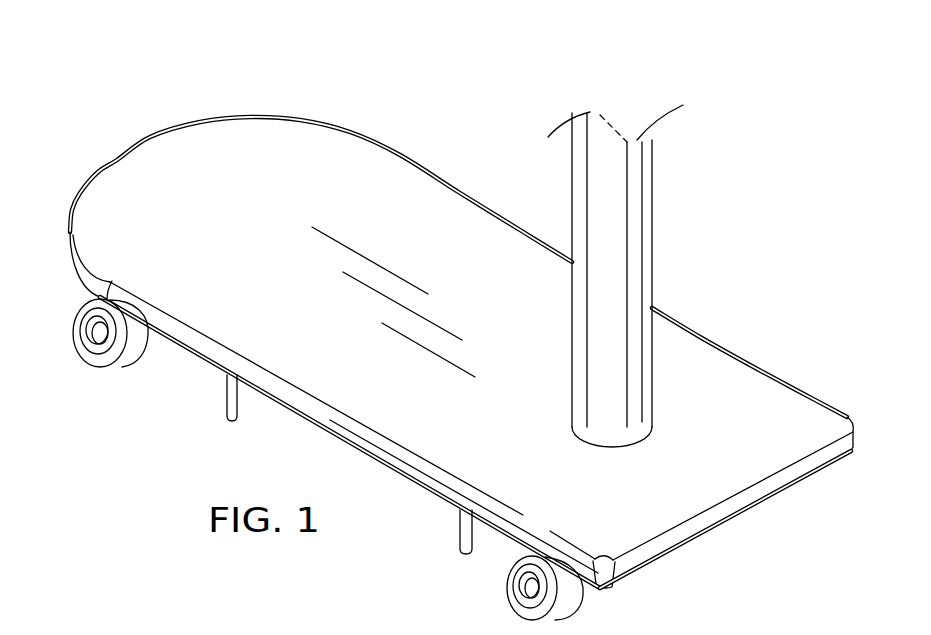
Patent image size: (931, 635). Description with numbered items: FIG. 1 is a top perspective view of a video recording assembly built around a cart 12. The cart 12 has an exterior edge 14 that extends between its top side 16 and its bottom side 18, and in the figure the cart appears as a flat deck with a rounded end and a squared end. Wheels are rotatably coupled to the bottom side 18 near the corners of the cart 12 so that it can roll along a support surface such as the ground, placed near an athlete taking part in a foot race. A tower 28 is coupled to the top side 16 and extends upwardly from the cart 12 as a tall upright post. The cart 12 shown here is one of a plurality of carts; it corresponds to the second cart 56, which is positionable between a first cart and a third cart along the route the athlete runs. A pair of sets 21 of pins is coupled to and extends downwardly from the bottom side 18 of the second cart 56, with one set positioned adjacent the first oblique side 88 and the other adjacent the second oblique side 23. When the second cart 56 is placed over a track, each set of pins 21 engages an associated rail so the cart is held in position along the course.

The cart 12 is at (461, 330).
The exterior edge 14 is at (374, 442).
The top side 16 is at (462, 219).
The bottom side 18 is at (312, 421).
The sets of pins 21 is at (224, 432).
The second oblique side 23 is at (400, 157).
The tower 28 is at (652, 219).
The second cart 56 is at (690, 546).
The first oblique side 88 is at (204, 351).